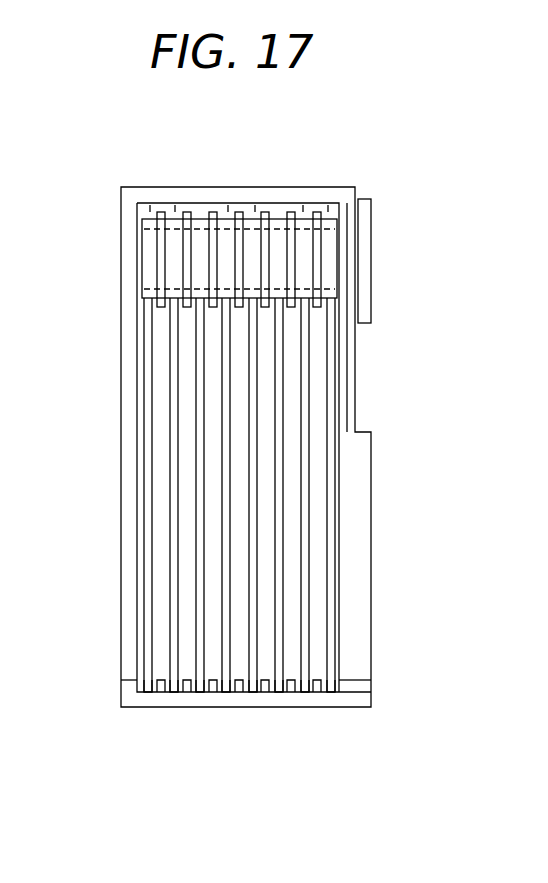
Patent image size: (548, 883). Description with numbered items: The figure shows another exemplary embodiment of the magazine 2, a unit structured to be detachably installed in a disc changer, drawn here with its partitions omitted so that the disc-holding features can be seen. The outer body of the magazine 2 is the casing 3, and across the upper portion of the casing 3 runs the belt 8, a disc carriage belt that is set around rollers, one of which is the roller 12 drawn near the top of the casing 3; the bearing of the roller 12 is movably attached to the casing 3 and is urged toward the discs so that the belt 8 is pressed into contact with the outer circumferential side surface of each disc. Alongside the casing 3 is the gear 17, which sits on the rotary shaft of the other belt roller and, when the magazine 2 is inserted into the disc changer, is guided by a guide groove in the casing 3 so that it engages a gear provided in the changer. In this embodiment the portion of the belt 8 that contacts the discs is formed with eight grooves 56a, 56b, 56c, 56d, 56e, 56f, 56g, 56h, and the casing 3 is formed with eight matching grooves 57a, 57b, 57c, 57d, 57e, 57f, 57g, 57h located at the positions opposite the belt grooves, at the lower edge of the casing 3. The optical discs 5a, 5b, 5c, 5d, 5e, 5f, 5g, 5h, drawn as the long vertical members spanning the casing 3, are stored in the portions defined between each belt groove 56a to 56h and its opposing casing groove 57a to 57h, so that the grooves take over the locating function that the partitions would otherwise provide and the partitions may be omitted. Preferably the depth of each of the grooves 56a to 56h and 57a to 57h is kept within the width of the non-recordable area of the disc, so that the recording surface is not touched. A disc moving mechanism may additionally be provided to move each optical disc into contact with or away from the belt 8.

The magazine 2 is at (121, 448).
The casing 3 is at (137, 512).
The optical disc 5a is at (332, 327).
The optical disc 5b is at (305, 368).
The optical disc 5c is at (278, 407).
The optical disc 5d is at (252, 455).
The optical disc 5e is at (226, 476).
The optical disc 5f is at (200, 510).
The optical disc 5g is at (174, 545).
The optical disc 5h is at (147, 587).
The belt 8 is at (143, 290).
The roller 12 is at (143, 243).
The gear 17 is at (366, 241).
The groove 56a is at (352, 190).
The groove 56b is at (328, 212).
The groove 56c is at (303, 213).
The groove 56d is at (255, 215).
The groove 56e is at (228, 215).
The groove 56f is at (175, 215).
The groove 56g is at (150, 213).
The groove 56h is at (138, 192).
The groove 57a is at (330, 697).
The groove 57b is at (305, 697).
The groove 57c is at (278, 697).
The groove 57d is at (251, 697).
The groove 57e is at (228, 697).
The groove 57f is at (199, 697).
The groove 57g is at (174, 697).
The groove 57h is at (145, 697).